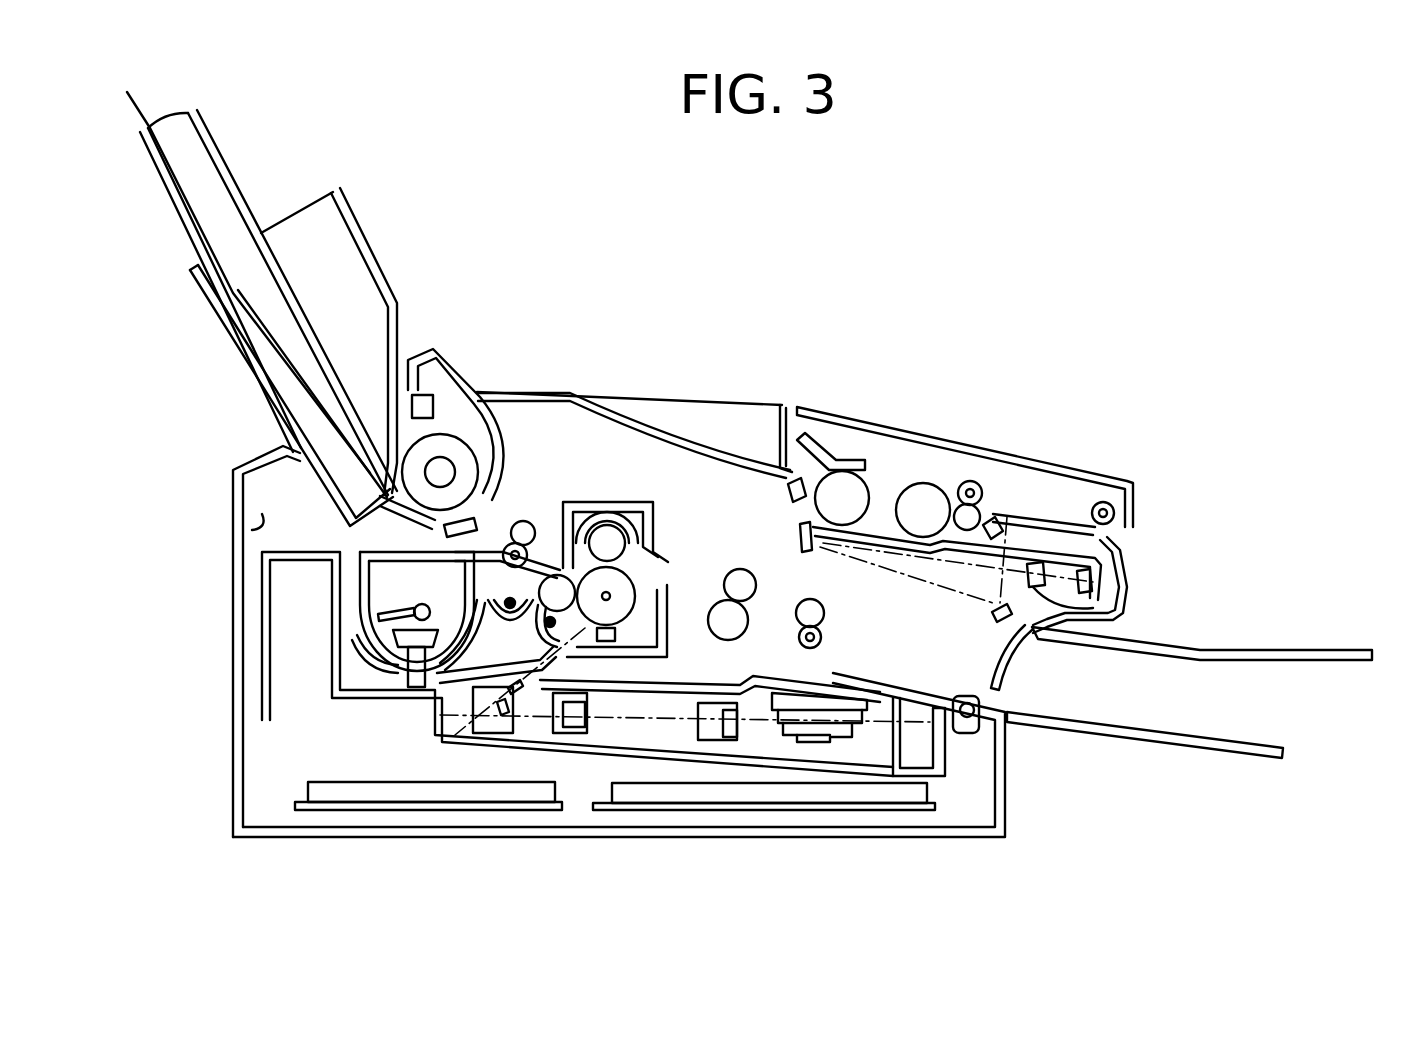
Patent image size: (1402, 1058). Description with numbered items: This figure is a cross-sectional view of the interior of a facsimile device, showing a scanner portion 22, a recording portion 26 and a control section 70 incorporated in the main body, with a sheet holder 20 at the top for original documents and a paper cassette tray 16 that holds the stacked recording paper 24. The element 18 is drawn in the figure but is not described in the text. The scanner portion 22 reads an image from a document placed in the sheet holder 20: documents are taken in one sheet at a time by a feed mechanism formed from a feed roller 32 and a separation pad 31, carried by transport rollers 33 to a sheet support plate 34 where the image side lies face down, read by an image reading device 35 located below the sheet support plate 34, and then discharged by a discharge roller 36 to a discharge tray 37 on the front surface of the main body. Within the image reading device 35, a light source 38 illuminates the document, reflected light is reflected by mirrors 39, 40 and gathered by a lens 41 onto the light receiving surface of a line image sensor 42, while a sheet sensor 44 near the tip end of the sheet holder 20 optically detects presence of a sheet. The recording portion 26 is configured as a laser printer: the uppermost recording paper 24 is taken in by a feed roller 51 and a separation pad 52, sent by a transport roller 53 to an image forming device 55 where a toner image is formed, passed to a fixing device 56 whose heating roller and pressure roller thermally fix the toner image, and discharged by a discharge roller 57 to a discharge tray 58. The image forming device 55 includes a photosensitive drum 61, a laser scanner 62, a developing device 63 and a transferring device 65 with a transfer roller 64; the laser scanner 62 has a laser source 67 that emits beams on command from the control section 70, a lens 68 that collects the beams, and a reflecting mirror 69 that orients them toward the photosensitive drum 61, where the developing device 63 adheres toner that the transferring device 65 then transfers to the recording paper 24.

The paper cassette tray 16 is at (237, 188).
The paper guide cover 18 is at (353, 297).
The sheet holder 20 is at (672, 470).
The scanner portion 22 is at (1012, 462).
The recording paper 24 is at (140, 112).
The recording portion 26 is at (392, 742).
The separation pad 31 is at (830, 466).
The feed roller 32 is at (848, 490).
The transport rollers 33 is at (975, 485).
The sheet support plate 34 is at (1030, 525).
The image reading device 35 is at (1110, 540).
The discharge roller 36 is at (1112, 508).
The discharge tray 37 is at (1268, 655).
The light source 38 is at (1003, 492).
The mirror 39 is at (1028, 642).
The mirror 40 is at (923, 495).
The lens 41 is at (1120, 610).
The line image sensor 42 is at (1128, 583).
The sheet sensor 44 is at (798, 443).
The feed roller 51 is at (413, 510).
The separation pad 52 is at (457, 447).
The transport roller 53 is at (527, 520).
The image forming device 55 is at (590, 492).
The fixing device 56 is at (738, 568).
The discharge roller 57 is at (783, 468).
The discharge tray 58 is at (1190, 745).
The photosensitive drum 61 is at (620, 612).
The laser scanner 62 is at (730, 767).
The developing device 63 is at (502, 648).
The transfer roller 64 is at (608, 530).
The transferring device 65 is at (628, 512).
The laser source 67 is at (840, 730).
The lens 68 is at (757, 783).
The reflecting mirror 69 is at (505, 716).
The control section 70 is at (625, 790).